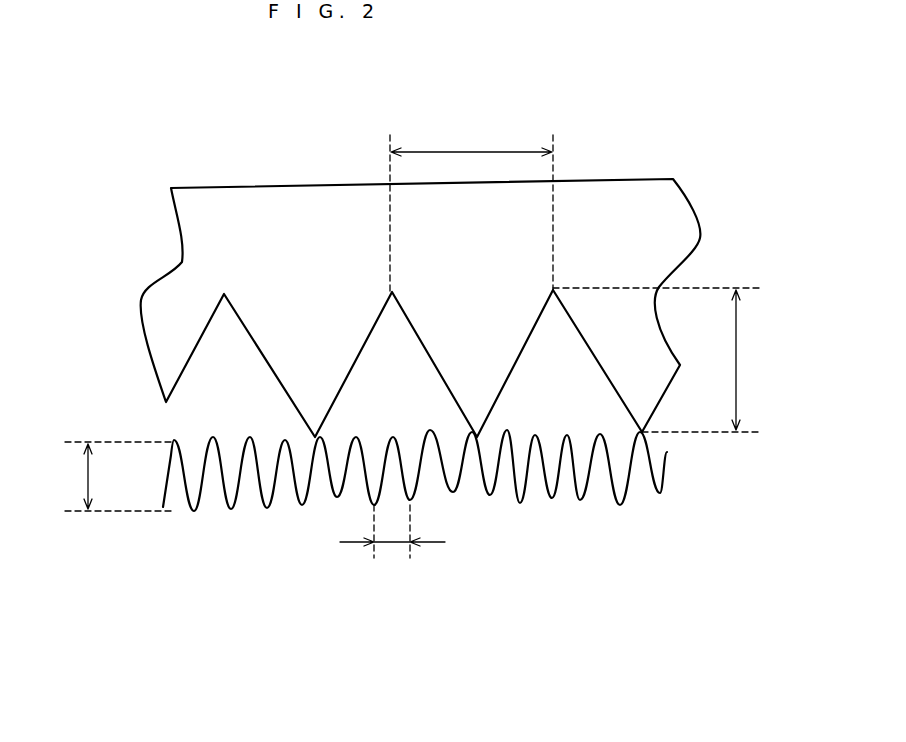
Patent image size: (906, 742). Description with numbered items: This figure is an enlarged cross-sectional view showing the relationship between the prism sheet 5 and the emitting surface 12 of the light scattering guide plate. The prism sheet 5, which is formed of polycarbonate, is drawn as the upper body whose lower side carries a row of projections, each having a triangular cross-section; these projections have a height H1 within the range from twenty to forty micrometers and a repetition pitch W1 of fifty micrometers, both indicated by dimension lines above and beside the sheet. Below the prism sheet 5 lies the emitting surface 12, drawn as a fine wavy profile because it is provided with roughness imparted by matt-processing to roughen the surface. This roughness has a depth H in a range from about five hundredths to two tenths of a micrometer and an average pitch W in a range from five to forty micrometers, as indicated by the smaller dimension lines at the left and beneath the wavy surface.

The prism sheet 5 is at (234, 204).
The emitting surface 12 is at (583, 497).
The repetition pitch W1 is at (471, 210).
The height H1 is at (660, 360).
The average pitch W is at (394, 531).
The depth H is at (117, 476).